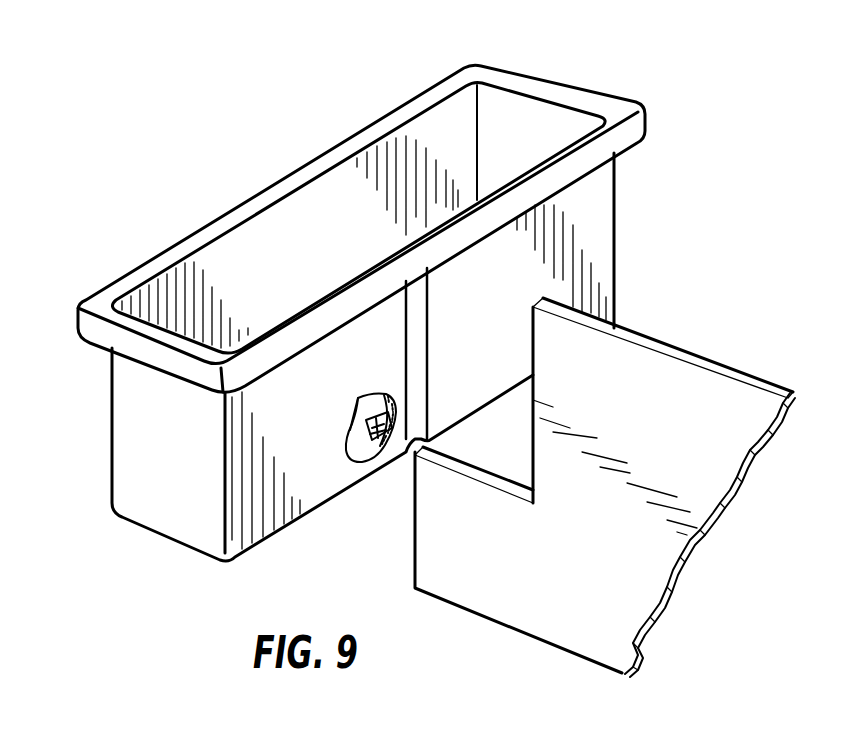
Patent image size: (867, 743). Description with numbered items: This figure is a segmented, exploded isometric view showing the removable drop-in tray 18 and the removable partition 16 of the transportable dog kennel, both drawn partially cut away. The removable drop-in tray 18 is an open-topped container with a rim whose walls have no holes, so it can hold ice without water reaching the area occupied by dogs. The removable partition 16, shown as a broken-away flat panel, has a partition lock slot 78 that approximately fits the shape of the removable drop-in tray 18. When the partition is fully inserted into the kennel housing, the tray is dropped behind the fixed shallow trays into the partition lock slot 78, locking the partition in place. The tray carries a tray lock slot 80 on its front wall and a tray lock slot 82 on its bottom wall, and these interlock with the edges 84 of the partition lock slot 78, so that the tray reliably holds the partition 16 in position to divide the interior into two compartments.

The removable partition 16 is at (628, 551).
The removable drop-in tray 18 is at (603, 225).
The partition lock slot 78 is at (473, 477).
The tray lock slot 80 is at (420, 318).
The tray lock slot 82 is at (380, 403).
The edges of the partition lock slot 84 is at (533, 443).